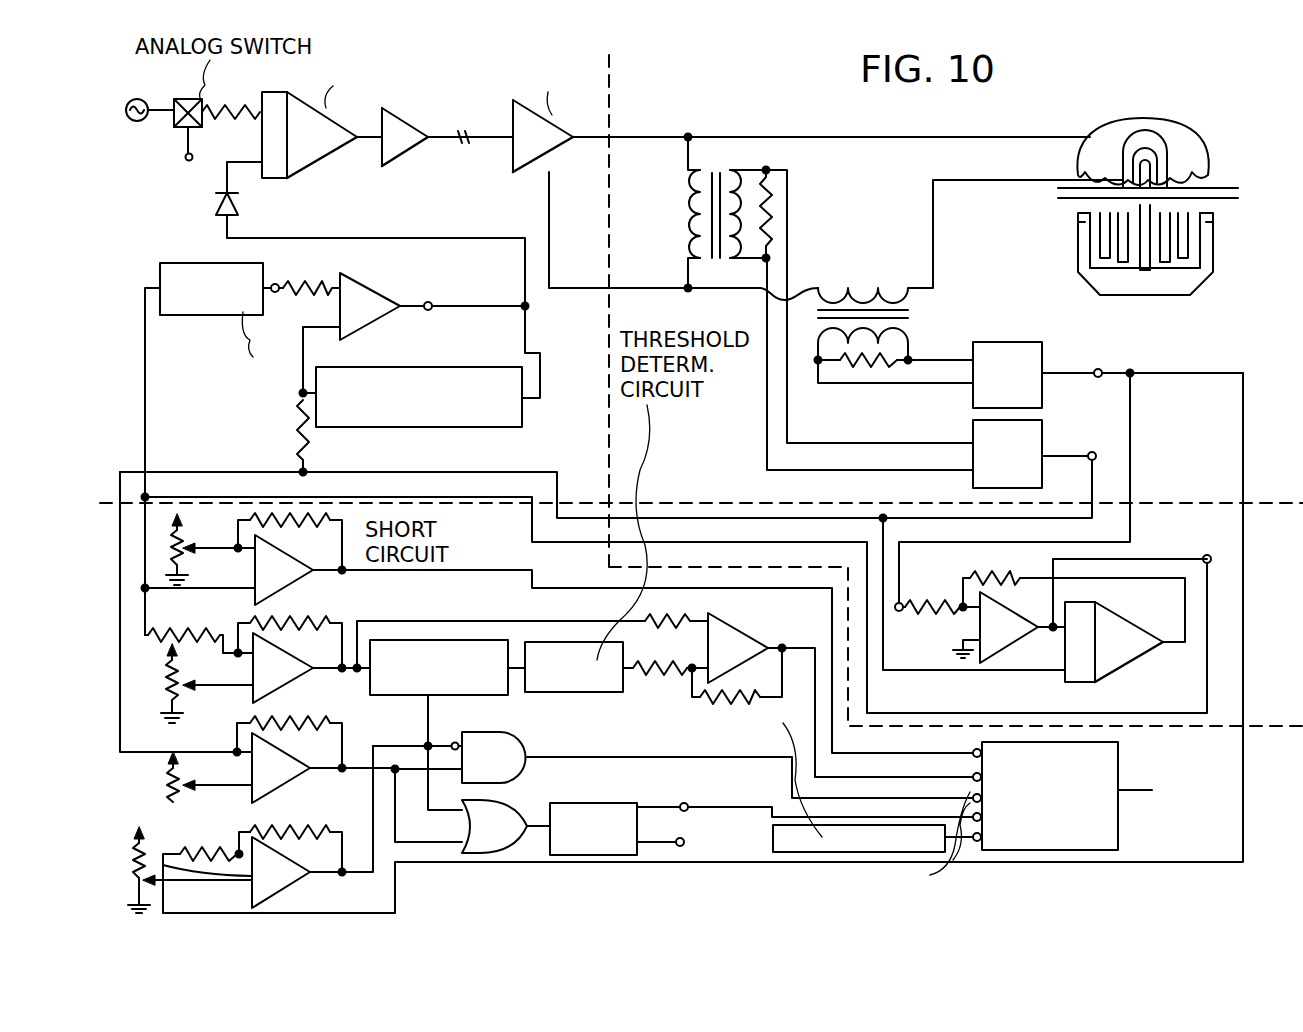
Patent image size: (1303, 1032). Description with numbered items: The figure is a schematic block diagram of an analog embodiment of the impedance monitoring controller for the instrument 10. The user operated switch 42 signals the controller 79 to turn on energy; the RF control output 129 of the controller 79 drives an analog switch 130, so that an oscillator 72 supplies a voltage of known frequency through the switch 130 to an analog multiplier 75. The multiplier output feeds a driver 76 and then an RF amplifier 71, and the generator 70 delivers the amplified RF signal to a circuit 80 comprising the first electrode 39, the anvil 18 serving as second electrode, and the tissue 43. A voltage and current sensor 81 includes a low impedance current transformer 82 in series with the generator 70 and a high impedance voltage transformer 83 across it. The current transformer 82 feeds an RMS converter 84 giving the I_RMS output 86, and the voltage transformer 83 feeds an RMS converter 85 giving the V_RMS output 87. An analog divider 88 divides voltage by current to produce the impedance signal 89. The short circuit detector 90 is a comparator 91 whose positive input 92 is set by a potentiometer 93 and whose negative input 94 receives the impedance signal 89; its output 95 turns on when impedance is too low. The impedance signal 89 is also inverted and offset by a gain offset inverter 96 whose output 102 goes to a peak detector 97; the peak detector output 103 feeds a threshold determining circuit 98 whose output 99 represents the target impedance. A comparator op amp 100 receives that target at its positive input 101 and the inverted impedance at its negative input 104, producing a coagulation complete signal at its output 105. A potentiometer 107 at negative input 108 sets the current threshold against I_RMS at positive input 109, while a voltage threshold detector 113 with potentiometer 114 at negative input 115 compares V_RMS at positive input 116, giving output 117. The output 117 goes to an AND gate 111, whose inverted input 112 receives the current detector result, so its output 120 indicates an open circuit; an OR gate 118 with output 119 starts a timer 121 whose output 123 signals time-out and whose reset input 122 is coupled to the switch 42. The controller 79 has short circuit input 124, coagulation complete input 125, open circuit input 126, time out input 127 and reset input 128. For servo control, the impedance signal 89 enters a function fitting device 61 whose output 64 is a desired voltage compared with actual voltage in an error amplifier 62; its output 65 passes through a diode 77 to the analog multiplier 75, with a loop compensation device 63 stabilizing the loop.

The instrument 10 is at (1218, 156).
The anvil 18 is at (1205, 150).
The first electrode 39 is at (1175, 185).
The tissue 43 is at (1232, 200).
The user operated switch 42 is at (773, 832).
The function fitting device 61 is at (200, 316).
The error amplifier 62 is at (368, 310).
The loop compensation device 63 is at (497, 428).
The output of function fitting device 64 is at (278, 283).
The output of error amplifier 65 is at (430, 301).
The generator 70 is at (462, 130).
The RF amplifier 71 is at (552, 152).
The oscillator 72 is at (133, 122).
The analog multiplier 75 is at (317, 145).
The driver 76 is at (405, 145).
The diode 77 is at (240, 207).
The controller 79 is at (1120, 822).
The circuit 80 is at (742, 128).
The voltage and current sensor 81 is at (748, 422).
The current transformer 82 is at (918, 314).
The voltage transformer 83 is at (752, 165).
The RMS converter 84 is at (975, 342).
The RMS converter 85 is at (973, 432).
The I_RMS output 86 is at (1095, 378).
The V_RMS output 87 is at (1096, 456).
The analog divider 88 is at (1165, 545).
The impedance signal 89 is at (1190, 648).
The short circuit detector 90 is at (320, 578).
The comparator 91 is at (283, 590).
The positive input 92 is at (246, 556).
The potentiometer 93 is at (192, 547).
The negative input 94 is at (250, 590).
The output of comparator 95 is at (289, 541).
The gain offset inverter 96 is at (318, 686).
The peak detector 97 is at (432, 640).
The threshold determining circuit 98 is at (567, 642).
The output of threshold determining circuit 99 is at (635, 672).
The comparator op amp 100 is at (732, 628).
The positive input 101 is at (272, 692).
The output of gain offset inverter 102 is at (290, 642).
The output of peak detector 103 is at (513, 660).
The negative input 104 is at (702, 612).
The comparator output 105 is at (778, 645).
The potentiometer 107 is at (140, 878).
The negative input 108 is at (275, 890).
The positive input 109 is at (152, 845).
The AND gate 111 is at (523, 738).
The inverted input 112 is at (433, 742).
The voltage threshold detector 113 is at (277, 790).
The potentiometer 114 is at (173, 802).
The negative input 115 is at (240, 790).
The positive input 116 is at (242, 755).
The output of voltage threshold detector 117 is at (323, 762).
The OR gate 118 is at (513, 805).
The output of OR gate 119 is at (530, 815).
The output of AND gate 120 is at (532, 752).
The timer 121 is at (663, 803).
The timer reset input 122 is at (685, 842).
The output of timer 123 is at (685, 802).
The short circuit input 124 is at (982, 755).
The coagulation complete input 125 is at (982, 798).
The open circuit input 126 is at (982, 778).
The time out input 127 is at (982, 817).
The reset input 128 is at (982, 837).
The RF control output 129 is at (186, 162).
The analog switch 130 is at (200, 128).